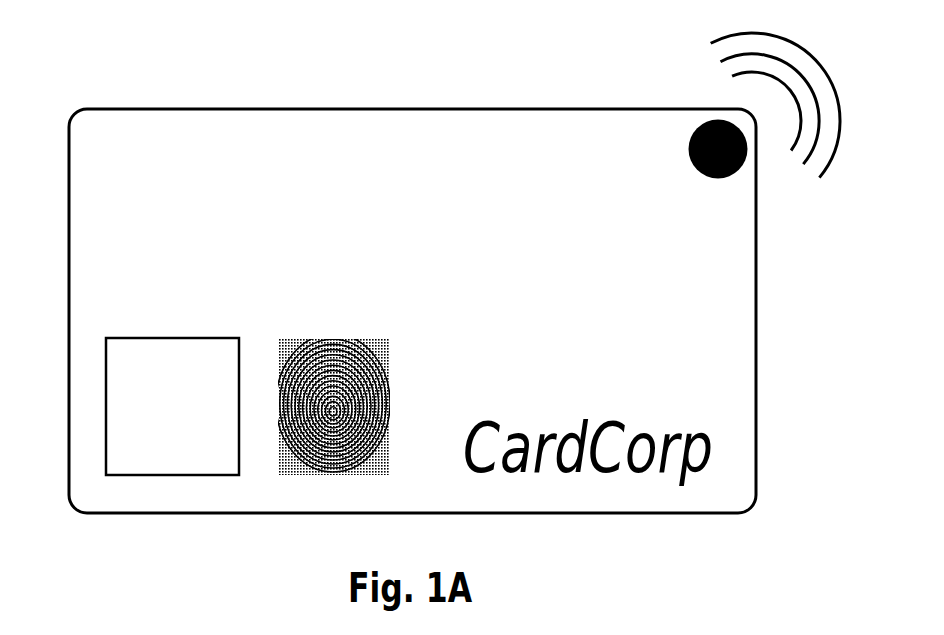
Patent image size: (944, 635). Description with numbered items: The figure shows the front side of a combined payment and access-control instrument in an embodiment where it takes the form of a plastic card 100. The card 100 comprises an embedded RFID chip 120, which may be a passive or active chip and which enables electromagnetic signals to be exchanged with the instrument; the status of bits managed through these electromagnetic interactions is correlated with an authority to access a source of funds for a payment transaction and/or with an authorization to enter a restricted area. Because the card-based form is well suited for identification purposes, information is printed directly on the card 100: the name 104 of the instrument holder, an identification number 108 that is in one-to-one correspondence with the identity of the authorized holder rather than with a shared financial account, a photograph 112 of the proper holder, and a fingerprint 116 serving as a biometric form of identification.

The card 100 is at (344, 68).
The name 104 is at (88, 186).
The identification number 108 is at (88, 235).
The photograph 112 is at (145, 333).
The fingerprint 116 is at (388, 389).
The RFID chip 120 is at (722, 179).